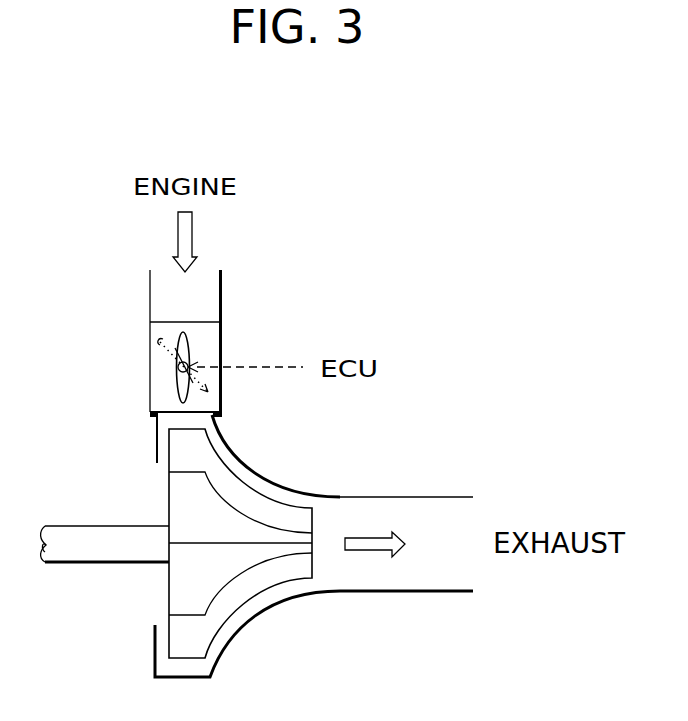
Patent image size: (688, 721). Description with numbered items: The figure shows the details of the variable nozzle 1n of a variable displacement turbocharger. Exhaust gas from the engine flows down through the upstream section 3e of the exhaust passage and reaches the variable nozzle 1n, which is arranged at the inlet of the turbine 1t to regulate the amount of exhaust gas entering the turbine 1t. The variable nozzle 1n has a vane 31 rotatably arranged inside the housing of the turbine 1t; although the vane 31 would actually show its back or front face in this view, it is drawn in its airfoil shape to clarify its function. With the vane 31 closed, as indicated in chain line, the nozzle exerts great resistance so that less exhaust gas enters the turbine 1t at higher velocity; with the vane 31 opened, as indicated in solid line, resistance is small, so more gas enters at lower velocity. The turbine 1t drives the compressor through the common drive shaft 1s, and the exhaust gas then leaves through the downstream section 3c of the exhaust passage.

The upstream section of exhaust passage 3e is at (148, 296).
The variable nozzle 1n is at (148, 371).
The vane 31 is at (189, 343).
The downstream section of exhaust passage 3c is at (412, 497).
The turbine 1t is at (262, 578).
The drive shaft 1s is at (88, 553).